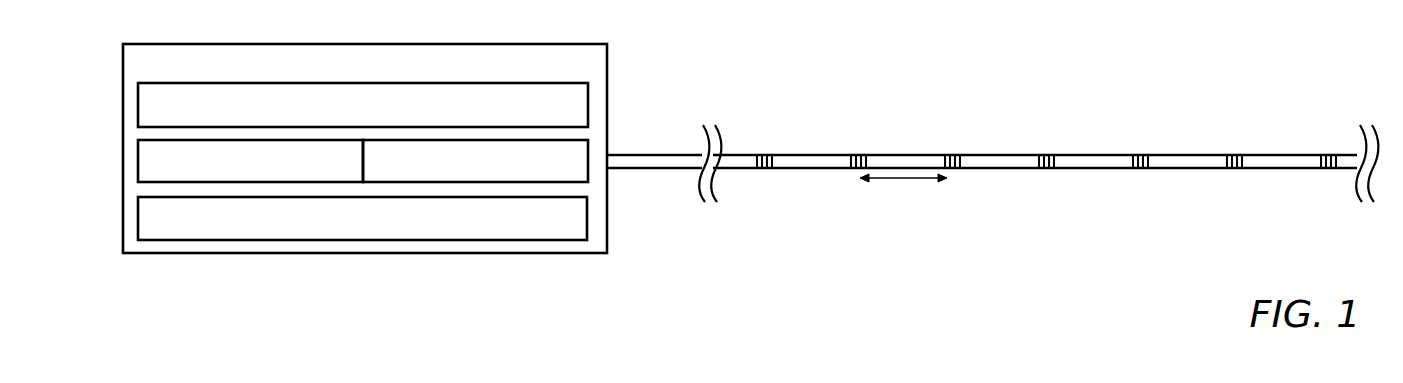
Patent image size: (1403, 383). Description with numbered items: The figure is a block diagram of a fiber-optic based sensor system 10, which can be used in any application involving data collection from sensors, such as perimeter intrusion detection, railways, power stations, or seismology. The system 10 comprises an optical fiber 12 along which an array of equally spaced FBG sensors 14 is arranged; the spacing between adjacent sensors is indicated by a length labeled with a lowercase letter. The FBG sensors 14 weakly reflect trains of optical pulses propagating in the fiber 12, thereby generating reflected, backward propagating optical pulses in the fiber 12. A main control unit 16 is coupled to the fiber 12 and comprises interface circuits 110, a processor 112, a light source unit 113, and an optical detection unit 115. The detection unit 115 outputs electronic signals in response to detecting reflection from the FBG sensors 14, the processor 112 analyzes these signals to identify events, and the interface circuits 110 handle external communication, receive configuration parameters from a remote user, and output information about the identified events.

The fiber-optic based sensor system 10 is at (879, 96).
The optical fiber 12 is at (987, 155).
The FBG sensors 14 is at (960, 168).
The main control unit 16 is at (512, 253).
The interface circuits 110 is at (138, 104).
The light source unit 113 is at (138, 162).
The optical detection unit 115 is at (592, 151).
The processor 112 is at (170, 240).